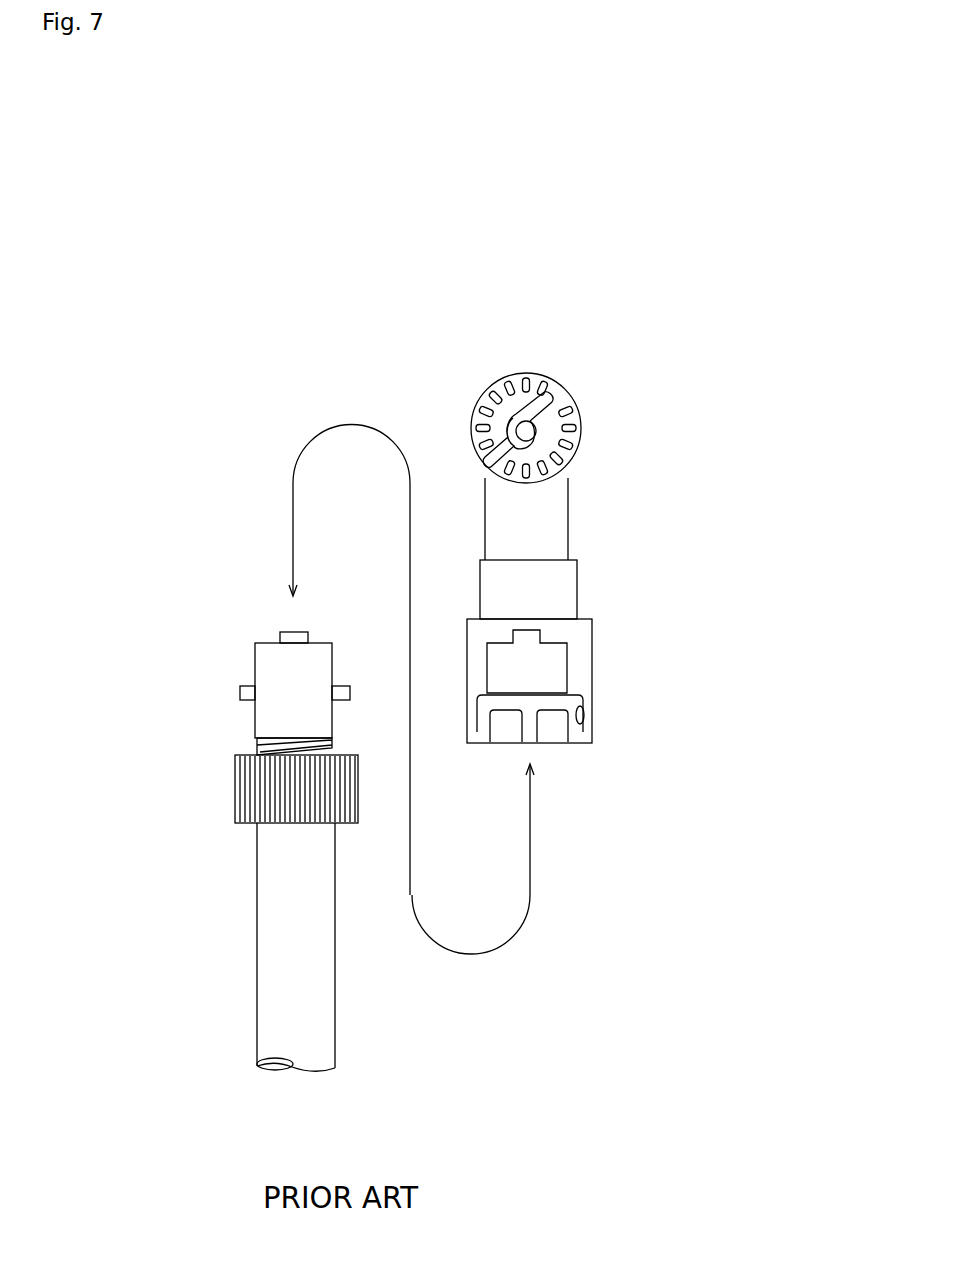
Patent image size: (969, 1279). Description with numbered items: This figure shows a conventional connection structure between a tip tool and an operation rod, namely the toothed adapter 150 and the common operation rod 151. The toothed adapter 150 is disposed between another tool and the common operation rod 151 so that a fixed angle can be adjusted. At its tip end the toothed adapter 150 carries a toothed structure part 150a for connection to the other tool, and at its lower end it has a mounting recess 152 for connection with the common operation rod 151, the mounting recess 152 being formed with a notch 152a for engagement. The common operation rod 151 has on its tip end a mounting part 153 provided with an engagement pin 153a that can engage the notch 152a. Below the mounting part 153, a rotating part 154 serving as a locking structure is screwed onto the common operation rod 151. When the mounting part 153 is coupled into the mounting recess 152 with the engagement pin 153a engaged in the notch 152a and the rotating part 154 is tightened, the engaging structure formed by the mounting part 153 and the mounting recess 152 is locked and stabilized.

The toothed adapter 150 is at (617, 526).
The toothed structure part 150a is at (562, 382).
The common operation rod 151 is at (335, 976).
The mounting recess 152 is at (592, 657).
The notch 152a is at (590, 735).
The mounting part 153 is at (262, 666).
The engagement pin 153a is at (240, 690).
The rotating part 154 is at (236, 811).